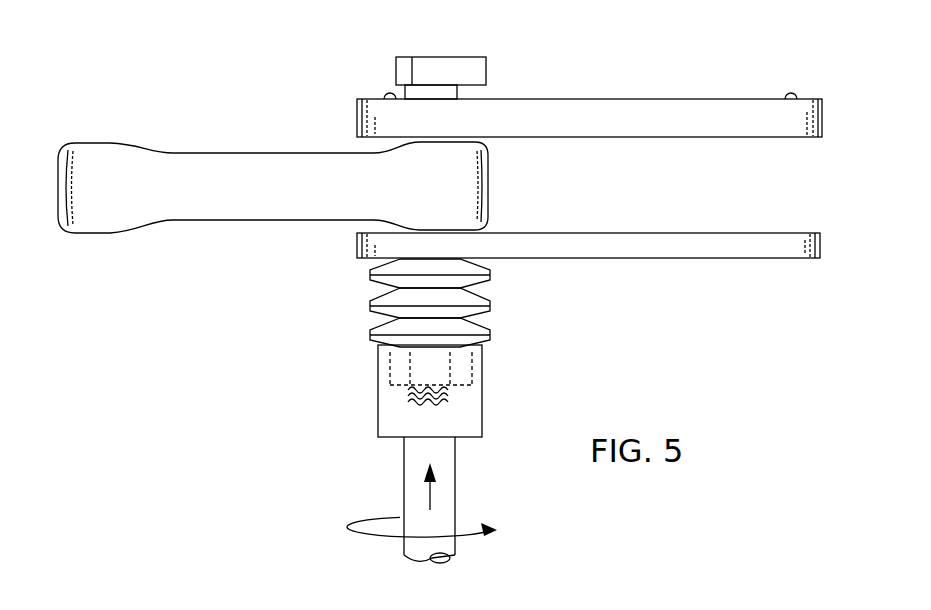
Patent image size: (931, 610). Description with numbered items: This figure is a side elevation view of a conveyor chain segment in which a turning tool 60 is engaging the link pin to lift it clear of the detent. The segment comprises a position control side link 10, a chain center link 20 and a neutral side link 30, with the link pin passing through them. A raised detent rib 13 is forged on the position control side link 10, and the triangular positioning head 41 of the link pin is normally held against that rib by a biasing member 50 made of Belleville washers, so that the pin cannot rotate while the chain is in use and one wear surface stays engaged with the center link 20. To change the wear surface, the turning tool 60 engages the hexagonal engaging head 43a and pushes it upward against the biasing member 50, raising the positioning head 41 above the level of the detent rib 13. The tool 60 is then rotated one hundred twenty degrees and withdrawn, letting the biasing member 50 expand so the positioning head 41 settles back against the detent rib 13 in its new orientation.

The position control side link 10 is at (575, 96).
The raised detent rib 13 is at (386, 93).
The chain center link 20 is at (227, 148).
The neutral side link 30 is at (671, 262).
The positioning head 41 is at (470, 68).
The hexagonal engaging head 43a is at (478, 378).
The biasing member 50 is at (503, 265).
The turning tool 60 is at (433, 399).